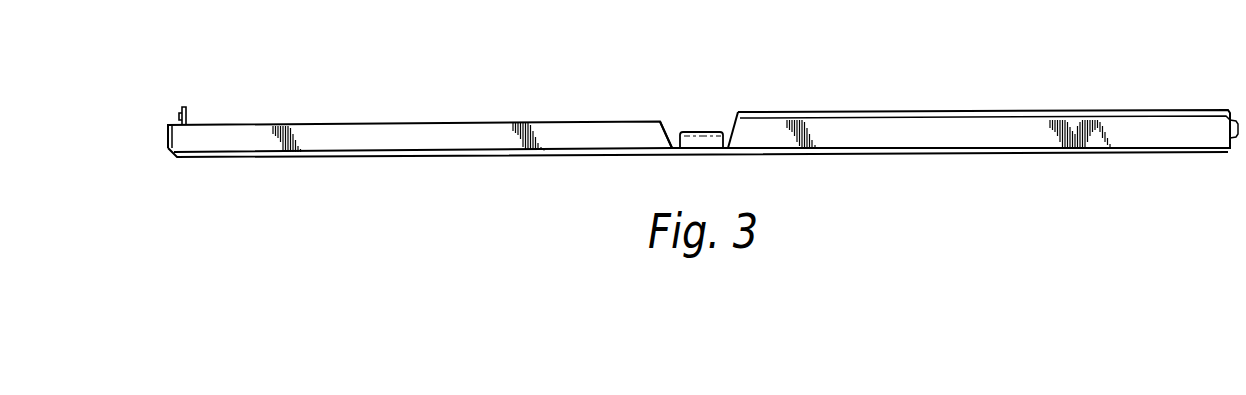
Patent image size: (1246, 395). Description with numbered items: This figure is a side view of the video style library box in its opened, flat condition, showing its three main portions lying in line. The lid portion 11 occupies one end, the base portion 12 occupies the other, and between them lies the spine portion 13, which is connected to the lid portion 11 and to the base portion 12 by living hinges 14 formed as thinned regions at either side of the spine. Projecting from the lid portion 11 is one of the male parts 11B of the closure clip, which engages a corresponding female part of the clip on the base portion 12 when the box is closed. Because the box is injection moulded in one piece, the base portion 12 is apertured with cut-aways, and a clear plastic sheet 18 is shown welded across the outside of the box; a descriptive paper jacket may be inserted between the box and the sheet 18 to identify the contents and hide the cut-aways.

The lid portion 11 is at (402, 102).
The male parts of closure clip 11B is at (189, 110).
The base portion 12 is at (1103, 96).
The spine portion 13 is at (698, 118).
The living hinges 14 is at (673, 138).
The clear plastic sheet 18 is at (405, 154).